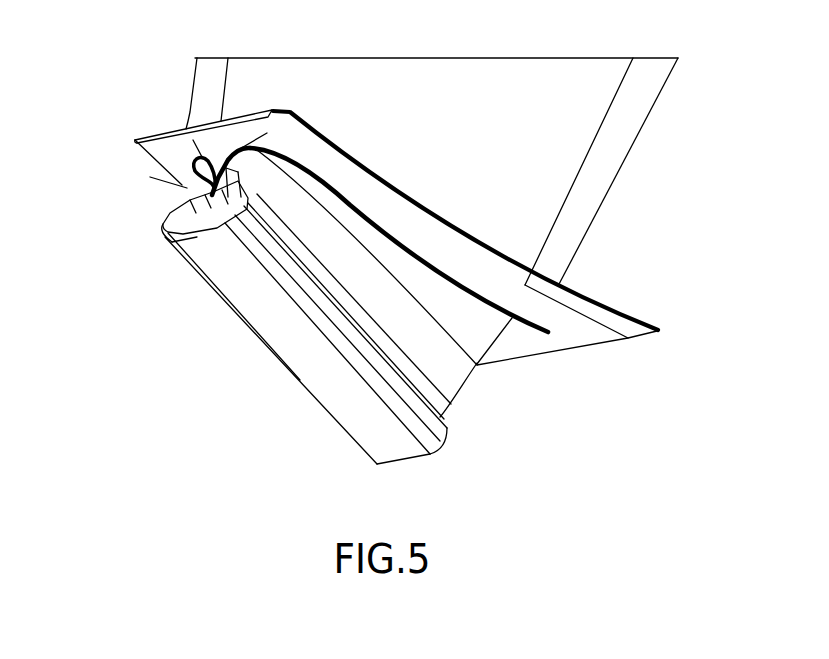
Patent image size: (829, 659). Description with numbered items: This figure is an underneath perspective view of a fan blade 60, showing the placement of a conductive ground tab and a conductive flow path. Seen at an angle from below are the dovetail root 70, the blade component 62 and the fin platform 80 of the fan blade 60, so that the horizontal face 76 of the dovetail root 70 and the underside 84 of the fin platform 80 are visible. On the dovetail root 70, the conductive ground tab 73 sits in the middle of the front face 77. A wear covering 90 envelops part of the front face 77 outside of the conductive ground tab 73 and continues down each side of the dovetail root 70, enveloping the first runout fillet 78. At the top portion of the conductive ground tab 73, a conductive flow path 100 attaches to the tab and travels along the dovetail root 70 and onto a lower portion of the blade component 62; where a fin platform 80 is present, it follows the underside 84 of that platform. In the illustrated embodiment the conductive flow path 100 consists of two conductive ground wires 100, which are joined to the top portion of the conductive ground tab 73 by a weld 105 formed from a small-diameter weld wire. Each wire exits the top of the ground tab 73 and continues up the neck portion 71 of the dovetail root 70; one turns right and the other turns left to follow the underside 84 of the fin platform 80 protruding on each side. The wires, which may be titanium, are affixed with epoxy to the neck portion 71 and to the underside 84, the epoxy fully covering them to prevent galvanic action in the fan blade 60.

The fan blade 60 is at (150, 58).
The blade component 62 is at (706, 58).
The dovetail root 70 is at (331, 347).
The neck portion 71 is at (175, 238).
The conductive ground tab 73 is at (170, 222).
The horizontal face 76 is at (270, 347).
The front face 77 is at (177, 238).
The first runout fillet 78 is at (447, 416).
The fin platform 80 is at (637, 312).
The underside of the fin platform 84 is at (572, 332).
The wear covering 90 is at (357, 307).
The conductive flow path 100 is at (522, 325).
The weld 105 is at (188, 187).